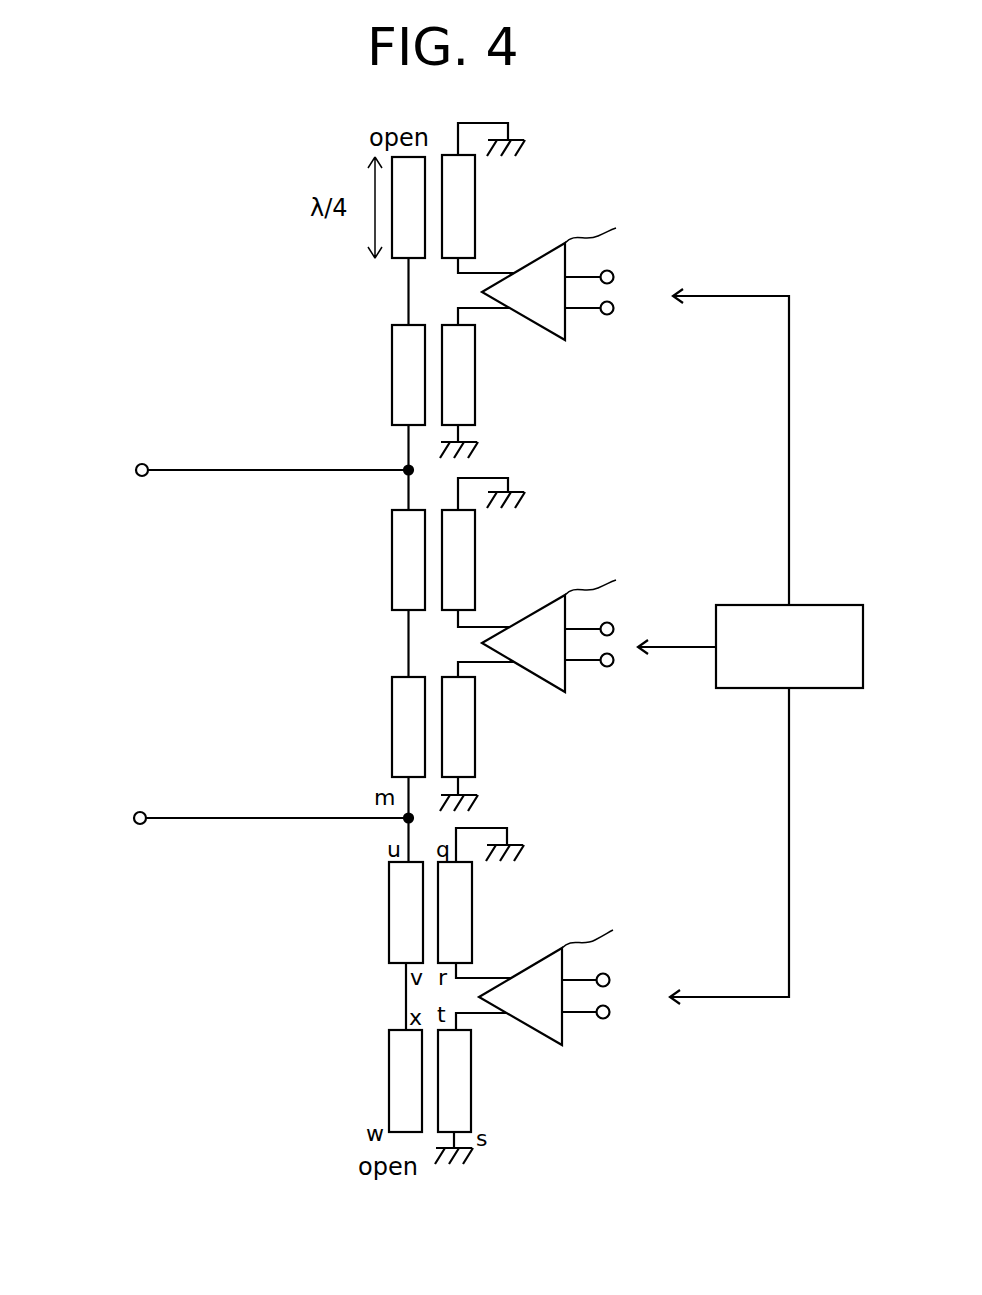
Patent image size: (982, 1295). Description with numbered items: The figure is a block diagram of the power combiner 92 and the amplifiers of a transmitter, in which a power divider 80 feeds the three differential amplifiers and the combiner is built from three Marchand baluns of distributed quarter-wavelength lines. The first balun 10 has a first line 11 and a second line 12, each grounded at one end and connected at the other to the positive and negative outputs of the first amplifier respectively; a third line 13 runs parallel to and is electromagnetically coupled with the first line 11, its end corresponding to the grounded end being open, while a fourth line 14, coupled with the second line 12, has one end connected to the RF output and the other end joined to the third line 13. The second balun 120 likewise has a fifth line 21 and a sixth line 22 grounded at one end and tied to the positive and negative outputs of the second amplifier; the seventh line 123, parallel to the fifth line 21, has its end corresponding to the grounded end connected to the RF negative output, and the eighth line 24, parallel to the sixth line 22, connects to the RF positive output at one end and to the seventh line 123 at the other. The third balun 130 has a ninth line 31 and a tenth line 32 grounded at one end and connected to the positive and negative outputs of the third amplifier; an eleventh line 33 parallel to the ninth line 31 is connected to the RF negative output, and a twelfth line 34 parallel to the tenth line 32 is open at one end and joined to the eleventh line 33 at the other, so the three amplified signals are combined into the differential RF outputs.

The first balun 10 is at (270, 272).
The first line 11 is at (475, 183).
The second line 12 is at (475, 400).
The third line 13 is at (392, 258).
The fourth line 14 is at (392, 325).
The fifth line 21 is at (475, 745).
The sixth line 22 is at (475, 555).
The eighth line 24 is at (392, 563).
The seventh line 123 is at (392, 730).
The ninth line 31 is at (473, 900).
The tenth line 32 is at (471, 1100).
The eleventh line 33 is at (389, 912).
The twelfth line 34 is at (389, 1083).
The power divider 80 is at (805, 605).
The power combiner 92 is at (53, 711).
The second balun 120 is at (269, 648).
The third balun 130 is at (269, 998).